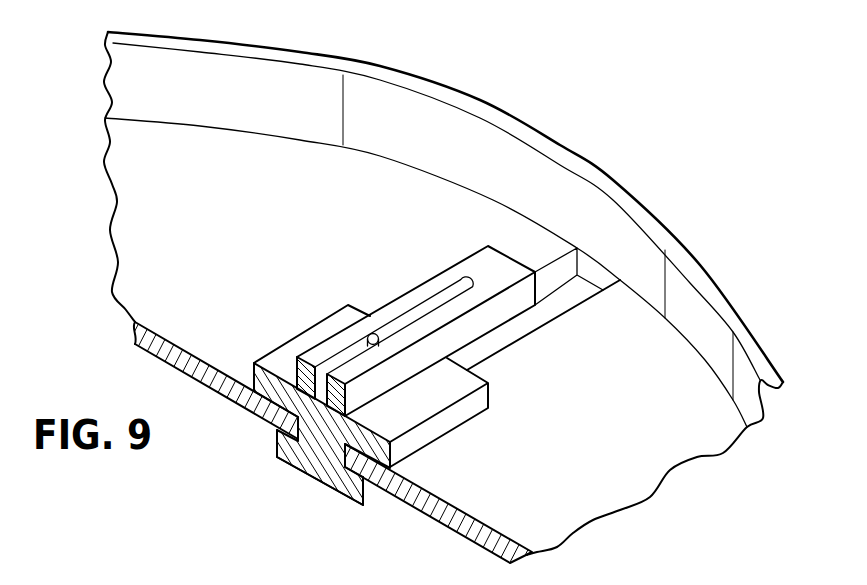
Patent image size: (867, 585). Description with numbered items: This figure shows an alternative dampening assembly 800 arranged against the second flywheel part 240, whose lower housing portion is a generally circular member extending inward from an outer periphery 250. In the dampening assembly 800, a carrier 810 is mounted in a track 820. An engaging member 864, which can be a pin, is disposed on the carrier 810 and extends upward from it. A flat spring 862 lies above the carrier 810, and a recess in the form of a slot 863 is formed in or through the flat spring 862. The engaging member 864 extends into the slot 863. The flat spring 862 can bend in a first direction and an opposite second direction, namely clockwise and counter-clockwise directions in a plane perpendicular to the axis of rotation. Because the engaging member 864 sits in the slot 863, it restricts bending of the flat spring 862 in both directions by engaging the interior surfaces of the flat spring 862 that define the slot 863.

The second flywheel part 240 is at (565, 98).
The outer periphery 250 is at (607, 181).
The dampening assembly 800 is at (276, 334).
The carrier 810 is at (308, 480).
The track 820 is at (556, 336).
The flat spring 862 is at (437, 273).
The slot 863 is at (455, 283).
The engaging member 864 is at (373, 333).